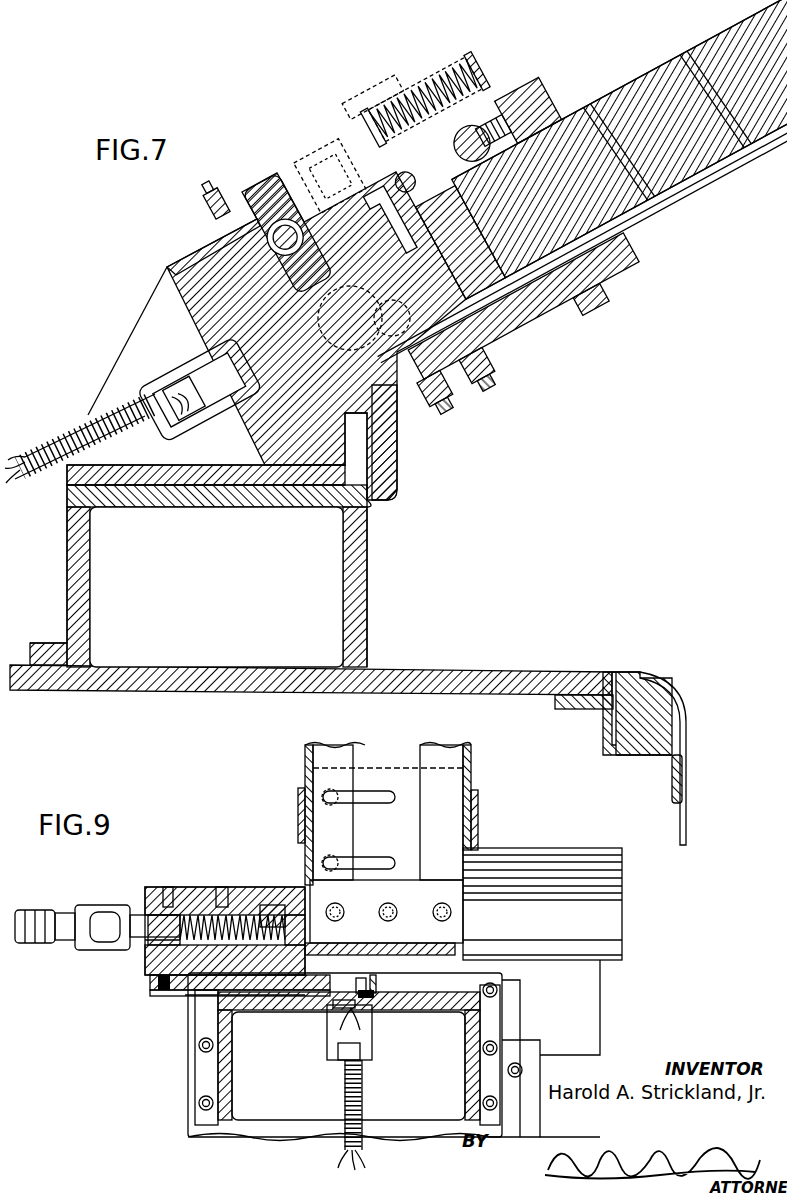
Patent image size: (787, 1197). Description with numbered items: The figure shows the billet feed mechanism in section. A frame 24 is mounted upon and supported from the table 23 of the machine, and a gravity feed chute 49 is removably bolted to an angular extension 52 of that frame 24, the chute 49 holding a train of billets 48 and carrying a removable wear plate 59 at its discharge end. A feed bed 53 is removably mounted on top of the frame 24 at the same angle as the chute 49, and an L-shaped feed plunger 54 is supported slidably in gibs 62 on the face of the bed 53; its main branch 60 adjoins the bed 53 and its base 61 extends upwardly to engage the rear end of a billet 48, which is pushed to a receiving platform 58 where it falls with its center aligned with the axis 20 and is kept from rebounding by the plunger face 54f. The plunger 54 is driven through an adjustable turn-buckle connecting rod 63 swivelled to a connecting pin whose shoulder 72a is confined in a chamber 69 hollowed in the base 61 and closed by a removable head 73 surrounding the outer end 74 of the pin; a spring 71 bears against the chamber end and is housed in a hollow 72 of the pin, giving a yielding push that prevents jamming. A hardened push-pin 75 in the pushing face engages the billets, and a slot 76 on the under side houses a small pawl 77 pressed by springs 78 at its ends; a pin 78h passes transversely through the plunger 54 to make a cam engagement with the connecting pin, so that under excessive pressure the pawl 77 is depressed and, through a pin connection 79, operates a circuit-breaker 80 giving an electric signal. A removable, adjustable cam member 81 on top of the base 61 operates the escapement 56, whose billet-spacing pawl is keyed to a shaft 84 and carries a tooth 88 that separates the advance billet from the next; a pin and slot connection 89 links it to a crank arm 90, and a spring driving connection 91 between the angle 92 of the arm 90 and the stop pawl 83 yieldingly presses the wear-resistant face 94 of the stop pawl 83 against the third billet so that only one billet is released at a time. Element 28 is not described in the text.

In FIG. 7, the table 23 is at (486, 672).
In FIG. 7, the frame 24 is at (367, 566).
In FIG. 9, the frame 24 is at (600, 1025).
In FIG. 9, the retainer 28 is at (375, 1000).
In FIG. 7, the billet 48 is at (552, 218).
In FIG. 7, the chute 49 is at (582, 267).
In FIG. 9, the chute 49 is at (455, 786).
In FIG. 7, the angular extension 52 is at (538, 332).
In FIG. 7, the feed bed 53 is at (215, 310).
In FIG. 9, the feed bed 53 is at (245, 1012).
In FIG. 7, the feed plunger 54 is at (300, 430).
In FIG. 9, the feed plunger 54 is at (200, 995).
In FIG. 7, the plunger face 54f is at (397, 390).
In FIG. 7, the escapement 56 is at (323, 157).
In FIG. 9, the receiving platform 58 is at (535, 942).
In FIG. 7, the wear plate 59 is at (457, 410).
In FIG. 9, the main branch 60 is at (470, 957).
In FIG. 9, the base 61 is at (195, 905).
In FIG. 7, the gibs 62 is at (320, 400).
In FIG. 9, the connecting rod 63 is at (78, 905).
In FIG. 9, the chamber 69 is at (272, 905).
In FIG. 9, the spring 71 is at (258, 887).
In FIG. 9, the hollow 72 is at (215, 997).
In FIG. 9, the shoulder 72a is at (145, 905).
In FIG. 9, the removable head 73 is at (150, 978).
In FIG. 9, the outer end of pin 74 is at (125, 905).
In FIG. 9, the push-pin 75 is at (310, 893).
In FIG. 9, the slot 76 is at (300, 1010).
In FIG. 7, the pawl 77 is at (206, 402).
In FIG. 9, the pawl 77 is at (318, 1012).
In FIG. 9, the springs 78 is at (165, 985).
In FIG. 9, the pin 78h is at (312, 938).
In FIG. 9, the pin connection 79 is at (372, 1010).
In FIG. 7, the circuit-breaker 80 is at (185, 401).
In FIG. 9, the circuit-breaker 80 is at (345, 1020).
In FIG. 7, the cam member 81 is at (268, 219).
In FIG. 9, the cam member 81 is at (187, 887).
In FIG. 7, the stop pawl 83 is at (489, 100).
In FIG. 7, the shaft 84 is at (195, 201).
In FIG. 7, the billet-engaging tooth 88 is at (415, 232).
In FIG. 7, the pin and slot connection 89 is at (341, 159).
In FIG. 7, the crank arm 90 is at (412, 77).
In FIG. 7, the spring driving connection 91 is at (410, 72).
In FIG. 7, the angle of arm 92 is at (355, 87).
In FIG. 7, the wear-resistant face 94 is at (613, 93).
In FIG. 9, the axis 20 is at (150, 945).